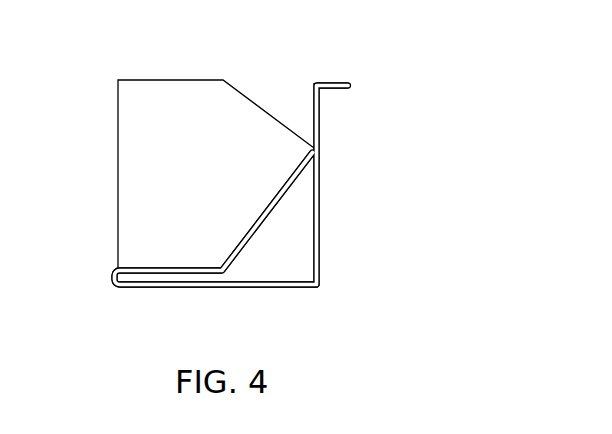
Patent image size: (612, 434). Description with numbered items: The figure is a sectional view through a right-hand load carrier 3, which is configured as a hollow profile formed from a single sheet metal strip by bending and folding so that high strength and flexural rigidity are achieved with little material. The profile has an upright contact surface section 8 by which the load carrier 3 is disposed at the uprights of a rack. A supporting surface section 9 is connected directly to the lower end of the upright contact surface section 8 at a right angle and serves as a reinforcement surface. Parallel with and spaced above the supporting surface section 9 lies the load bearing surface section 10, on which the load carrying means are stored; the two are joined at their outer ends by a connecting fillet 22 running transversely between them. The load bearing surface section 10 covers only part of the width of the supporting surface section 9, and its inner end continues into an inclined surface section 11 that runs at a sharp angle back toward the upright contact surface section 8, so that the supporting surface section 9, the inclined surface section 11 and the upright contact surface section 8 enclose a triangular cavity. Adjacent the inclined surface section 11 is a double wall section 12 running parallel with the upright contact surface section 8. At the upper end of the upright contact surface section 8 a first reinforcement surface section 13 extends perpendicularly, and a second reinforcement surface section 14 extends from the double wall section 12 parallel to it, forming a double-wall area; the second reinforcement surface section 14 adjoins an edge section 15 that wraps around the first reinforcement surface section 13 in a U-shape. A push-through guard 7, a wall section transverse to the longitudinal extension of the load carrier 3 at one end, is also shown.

The right-hand load carrier 3 is at (264, 184).
The push-through guard 7 is at (165, 93).
The upright contact surface section 8 is at (318, 231).
The supporting surface section 9 is at (203, 290).
The load bearing surface section 10 is at (150, 266).
The inclined surface section 11 is at (277, 192).
The double wall section 12 is at (313, 110).
The first reinforcement surface section 13 is at (330, 89).
The second reinforcement surface section 14 is at (325, 82).
The edge section 15 is at (352, 87).
The connecting fillet 22 is at (110, 284).